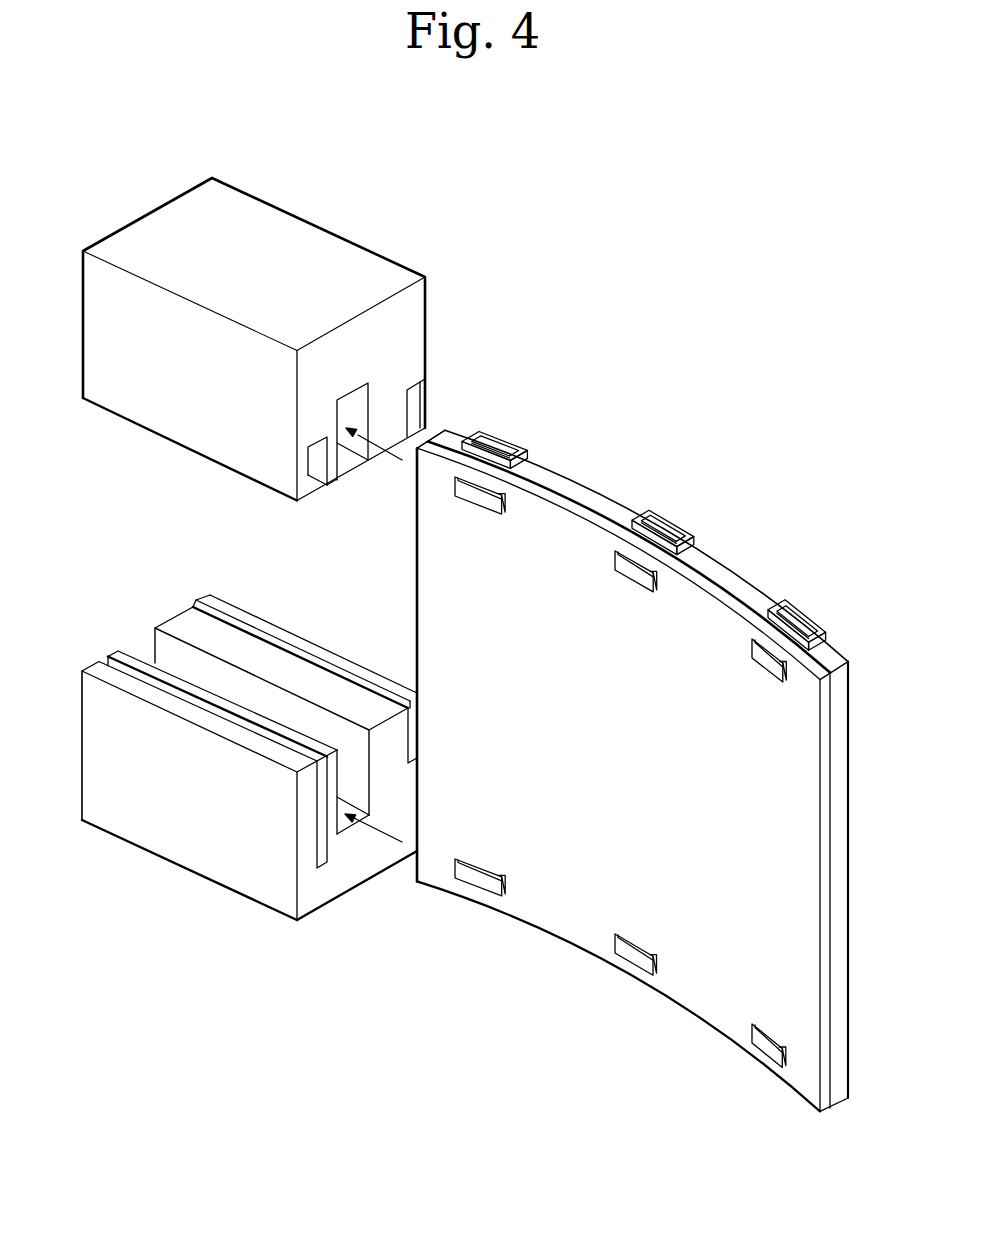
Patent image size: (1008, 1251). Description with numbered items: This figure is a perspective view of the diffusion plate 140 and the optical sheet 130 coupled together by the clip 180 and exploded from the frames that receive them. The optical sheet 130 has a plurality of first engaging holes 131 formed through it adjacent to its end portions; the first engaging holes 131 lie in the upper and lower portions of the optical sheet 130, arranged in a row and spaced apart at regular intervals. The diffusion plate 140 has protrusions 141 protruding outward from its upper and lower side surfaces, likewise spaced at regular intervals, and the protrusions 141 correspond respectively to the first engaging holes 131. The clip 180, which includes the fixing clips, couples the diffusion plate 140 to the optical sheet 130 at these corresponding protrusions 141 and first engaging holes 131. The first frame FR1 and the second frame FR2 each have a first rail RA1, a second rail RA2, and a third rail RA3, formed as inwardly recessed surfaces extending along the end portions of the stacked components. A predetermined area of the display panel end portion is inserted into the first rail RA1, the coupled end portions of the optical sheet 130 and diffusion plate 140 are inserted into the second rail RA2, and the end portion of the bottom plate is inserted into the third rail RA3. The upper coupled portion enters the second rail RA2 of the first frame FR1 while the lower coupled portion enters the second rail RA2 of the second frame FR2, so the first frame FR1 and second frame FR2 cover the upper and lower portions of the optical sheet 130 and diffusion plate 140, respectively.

The first frame FR1 is at (333, 245).
The second frame FR2 is at (298, 637).
The first rail RA1 is at (316, 489).
The second rail RA2 is at (351, 468).
The third rail RA3 is at (419, 405).
The optical sheet 130 is at (715, 590).
The first engaging holes 131 is at (500, 514).
The diffusion plate 140 is at (612, 510).
The protrusions 141 is at (522, 452).
The clip 180 is at (465, 449).